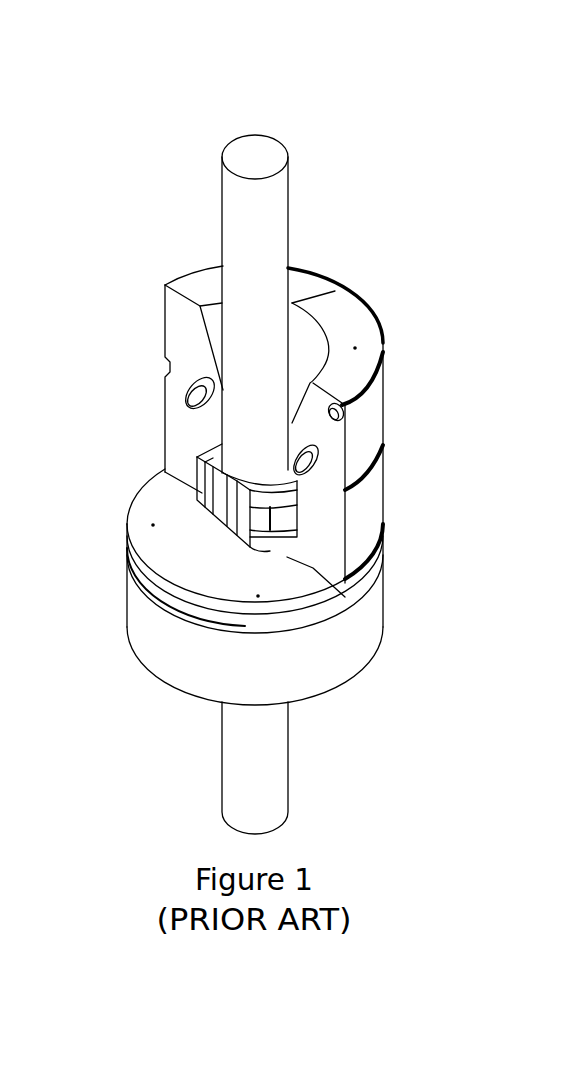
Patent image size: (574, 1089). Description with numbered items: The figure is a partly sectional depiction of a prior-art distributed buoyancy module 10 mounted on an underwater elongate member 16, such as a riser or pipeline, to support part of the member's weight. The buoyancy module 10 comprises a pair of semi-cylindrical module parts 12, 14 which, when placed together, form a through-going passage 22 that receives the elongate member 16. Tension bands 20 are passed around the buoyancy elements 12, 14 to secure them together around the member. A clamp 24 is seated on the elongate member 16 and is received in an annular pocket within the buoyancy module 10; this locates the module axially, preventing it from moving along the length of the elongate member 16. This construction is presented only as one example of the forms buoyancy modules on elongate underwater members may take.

The buoyancy module 10 is at (133, 148).
The semi-cylindrical module part 12 is at (164, 683).
The semi-cylindrical module part 14 is at (383, 516).
The elongate member 16 is at (270, 252).
The tension bands 20 is at (137, 590).
The through-going passage 22 is at (309, 337).
The clamp 24 is at (197, 447).